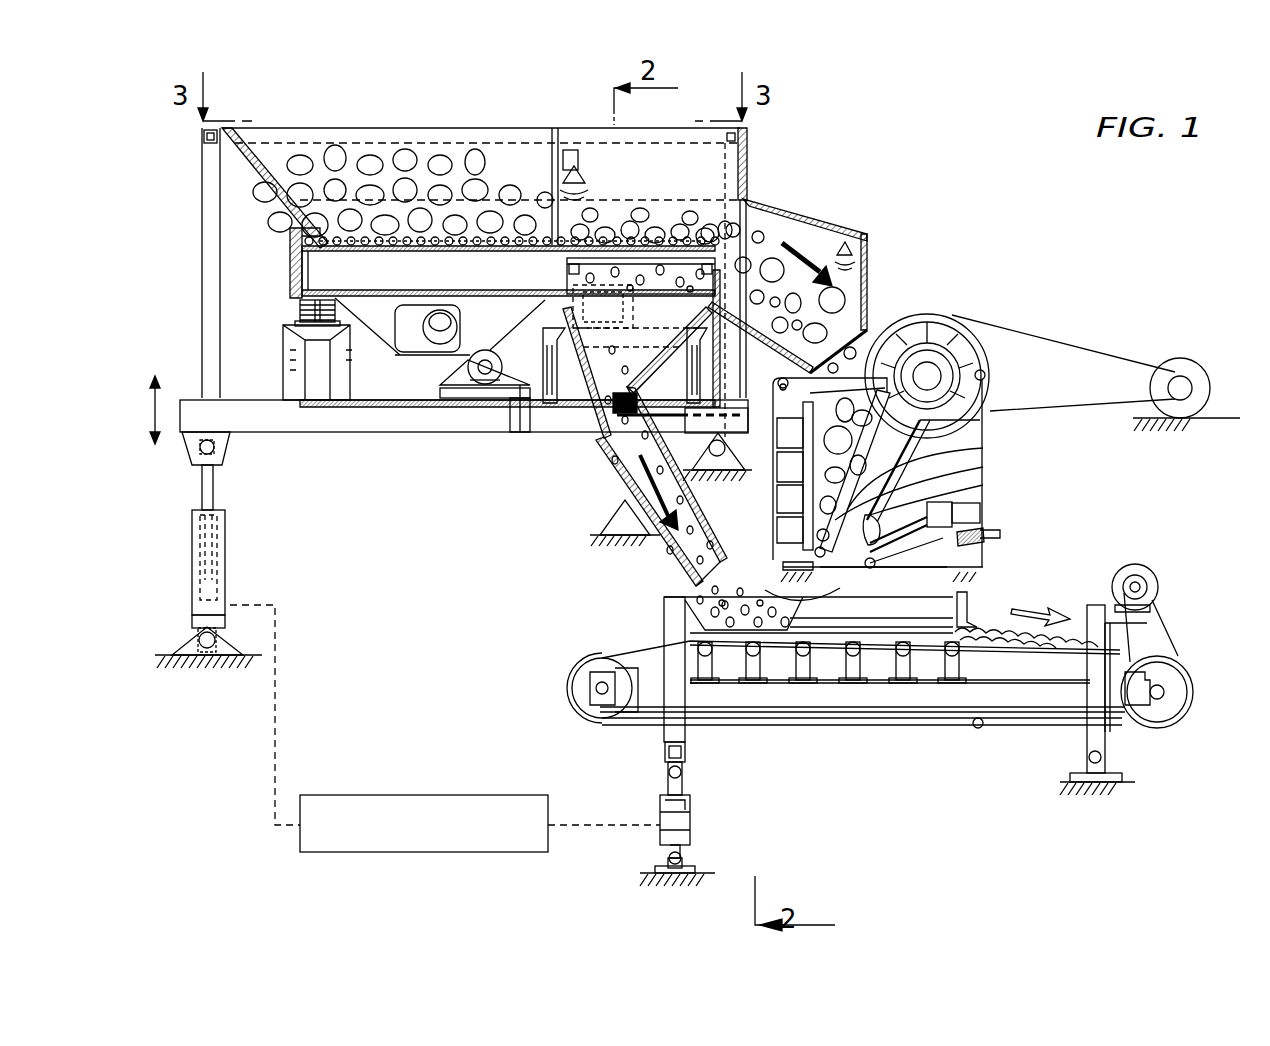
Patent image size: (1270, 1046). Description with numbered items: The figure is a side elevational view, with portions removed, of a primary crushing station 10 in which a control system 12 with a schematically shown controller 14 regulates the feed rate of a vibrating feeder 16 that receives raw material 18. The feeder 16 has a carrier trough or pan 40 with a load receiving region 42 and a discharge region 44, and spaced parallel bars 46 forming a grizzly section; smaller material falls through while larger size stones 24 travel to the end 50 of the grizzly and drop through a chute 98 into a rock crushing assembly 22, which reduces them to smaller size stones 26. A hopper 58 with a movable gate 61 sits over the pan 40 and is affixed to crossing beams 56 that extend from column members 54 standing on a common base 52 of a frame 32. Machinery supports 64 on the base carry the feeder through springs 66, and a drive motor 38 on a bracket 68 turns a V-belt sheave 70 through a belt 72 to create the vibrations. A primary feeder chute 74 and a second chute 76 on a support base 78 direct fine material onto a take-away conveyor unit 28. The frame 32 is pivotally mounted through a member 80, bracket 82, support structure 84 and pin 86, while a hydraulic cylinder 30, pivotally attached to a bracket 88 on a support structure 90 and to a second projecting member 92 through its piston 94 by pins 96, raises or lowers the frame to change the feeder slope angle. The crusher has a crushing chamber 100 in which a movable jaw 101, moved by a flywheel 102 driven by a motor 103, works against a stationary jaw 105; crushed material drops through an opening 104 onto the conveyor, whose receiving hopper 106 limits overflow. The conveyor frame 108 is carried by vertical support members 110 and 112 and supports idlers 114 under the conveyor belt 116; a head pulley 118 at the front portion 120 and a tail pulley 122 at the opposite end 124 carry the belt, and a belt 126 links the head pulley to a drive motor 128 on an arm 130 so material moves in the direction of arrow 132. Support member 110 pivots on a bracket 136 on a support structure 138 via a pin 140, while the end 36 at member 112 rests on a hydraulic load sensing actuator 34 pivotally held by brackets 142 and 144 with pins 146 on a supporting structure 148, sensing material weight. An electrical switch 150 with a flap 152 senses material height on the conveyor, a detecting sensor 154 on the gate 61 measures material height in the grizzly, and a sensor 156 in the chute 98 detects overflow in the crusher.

The primary crushing station 10 is at (810, 140).
The control system 12 is at (228, 740).
The controller 14 is at (413, 795).
The vibrating feeder 16 is at (290, 240).
The raw material 18 is at (375, 158).
The rock crushing assembly 22 is at (1000, 418).
The larger size stones 24 is at (838, 432).
The smaller size stones 26 is at (845, 590).
The take-away conveyor unit 28 is at (905, 727).
The hydraulic cylinders 30 is at (225, 582).
The frame 32 is at (378, 434).
The hydraulic load sensing actuator 34 is at (692, 812).
The end of conveyor unit 36 is at (700, 733).
The drive motor 38 is at (468, 385).
The carrier trough or pan 40 is at (335, 254).
The load receiving region 42 is at (400, 256).
The discharge region 44 is at (555, 258).
The spaced parallel bars 46 is at (740, 265).
The end of grizzly section 50 is at (718, 222).
The common base 52 is at (245, 408).
The column members 54 is at (202, 340).
The crossing beams 56 is at (312, 130).
The hopper 58 is at (275, 183).
The movable gate 61 is at (552, 158).
The machinery supports 64 is at (283, 360).
The springs 66 is at (300, 312).
The bracket 68 is at (505, 434).
The V-belt sheave 70 is at (410, 352).
The belt 72 is at (500, 368).
The primary feeder chute 74 is at (650, 360).
The second chute 76 is at (612, 478).
The support base 78 is at (612, 522).
The member 80 is at (728, 456).
The bracket 82 is at (722, 478).
The support structure 84 is at (705, 485).
The pin 86 is at (745, 413).
The bracket 88 is at (192, 640).
The support structure 90 is at (163, 655).
The second projecting member 92 is at (190, 448).
The jack rod 94 is at (220, 470).
The pins 96 is at (216, 446).
The chute 98 is at (875, 298).
The crushing chamber 100 is at (985, 472).
The movable jaw 101 is at (985, 492).
The flywheel 102 is at (958, 314).
The motor 103 is at (1185, 358).
The opening 104 is at (772, 592).
The stationary jaw 105 is at (985, 452).
The receiving hopper 106 is at (967, 642).
The conveyor frame 108 is at (835, 712).
The vertical support member 110 is at (1110, 752).
The vertical support member 112 is at (660, 735).
The idlers 114 is at (858, 665).
The conveyor belt 116 is at (664, 640).
The head pulley 118 is at (1193, 694).
The front portion of frame 120 is at (1160, 702).
The tail pulley 122 is at (572, 665).
The opposite end of frame 124 is at (596, 690).
The belt 126 is at (1175, 645).
The drive motor 128 is at (1145, 565).
The arm 130 is at (1160, 605).
The arrow 132 is at (1090, 605).
The bracket 136 is at (1125, 784).
The support structure 138 is at (1085, 790).
The pin 140 is at (1088, 757).
The bracket 142 is at (688, 768).
The bracket 144 is at (684, 860).
The pins 146 is at (668, 772).
The supporting structure 148 is at (650, 878).
The electrical switch 150 is at (975, 605).
The flap 152 is at (1020, 605).
The detecting sensor 154 is at (580, 173).
The sensor 156 is at (855, 252).